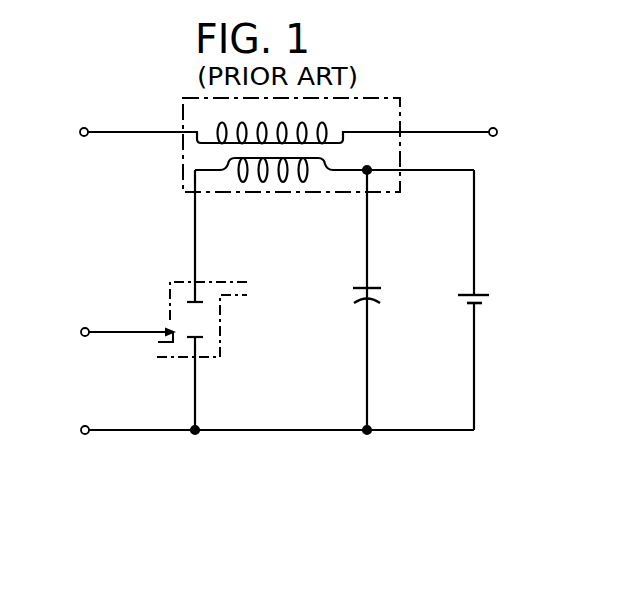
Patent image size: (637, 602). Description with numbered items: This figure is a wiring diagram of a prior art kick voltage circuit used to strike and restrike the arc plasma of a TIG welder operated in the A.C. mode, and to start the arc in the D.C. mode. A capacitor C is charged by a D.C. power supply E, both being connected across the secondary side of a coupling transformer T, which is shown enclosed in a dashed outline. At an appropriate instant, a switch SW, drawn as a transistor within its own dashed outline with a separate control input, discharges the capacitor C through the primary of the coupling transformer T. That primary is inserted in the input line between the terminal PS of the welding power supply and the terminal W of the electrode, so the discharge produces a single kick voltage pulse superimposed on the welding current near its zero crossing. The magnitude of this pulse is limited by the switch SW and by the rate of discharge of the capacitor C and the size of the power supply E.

The coupling transformer T is at (360, 122).
The power supply terminal PS is at (59, 133).
The electrode terminal W is at (512, 133).
The switch SW is at (228, 329).
The capacitor C is at (376, 312).
The D.C. power supply E is at (485, 301).